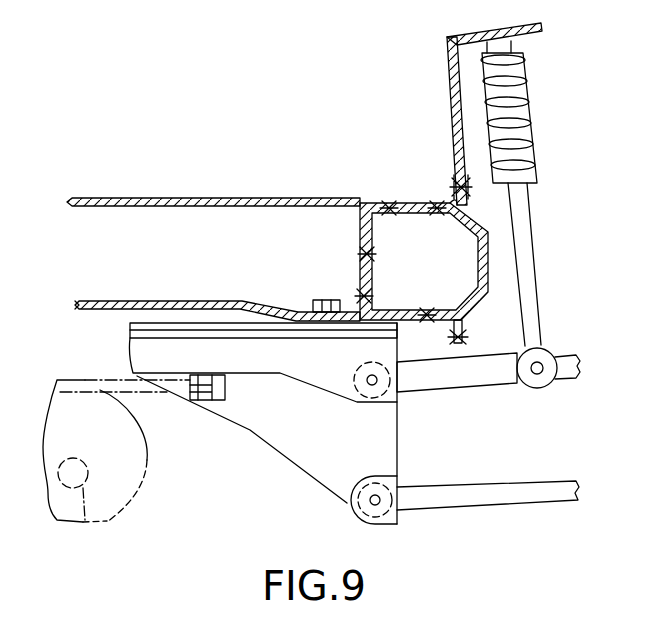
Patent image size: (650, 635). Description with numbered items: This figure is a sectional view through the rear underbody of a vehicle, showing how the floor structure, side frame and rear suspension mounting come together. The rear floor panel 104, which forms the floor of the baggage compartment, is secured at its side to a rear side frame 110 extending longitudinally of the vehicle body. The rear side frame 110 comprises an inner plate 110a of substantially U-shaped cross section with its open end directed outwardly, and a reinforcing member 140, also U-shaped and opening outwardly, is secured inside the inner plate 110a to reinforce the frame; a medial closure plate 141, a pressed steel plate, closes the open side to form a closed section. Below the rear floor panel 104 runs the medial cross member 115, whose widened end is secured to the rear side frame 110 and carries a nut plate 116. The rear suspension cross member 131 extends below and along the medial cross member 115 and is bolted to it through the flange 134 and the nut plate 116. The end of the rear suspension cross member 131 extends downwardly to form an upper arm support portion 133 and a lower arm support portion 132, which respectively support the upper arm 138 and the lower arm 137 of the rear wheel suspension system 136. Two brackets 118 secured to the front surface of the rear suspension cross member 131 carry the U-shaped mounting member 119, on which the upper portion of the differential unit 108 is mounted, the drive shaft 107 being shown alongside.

The rear floor panel 104 is at (131, 198).
The drive shaft 107 is at (85, 520).
The differential unit 108 is at (133, 503).
The rear side frame 110 is at (422, 202).
The inner plate 110a is at (360, 237).
The medial cross member 115 is at (114, 311).
The nut plate 116 is at (308, 313).
The bracket 118 is at (226, 390).
The mounting member 119 is at (140, 393).
The rear suspension cross member 131 is at (208, 410).
The lower arm support portion 132 is at (347, 502).
The upper arm support portion 133 is at (372, 402).
The flange 134 is at (332, 338).
The rear wheel suspension system 136 is at (560, 175).
The lower arm 137 is at (503, 503).
The upper arm 138 is at (500, 387).
The reinforcing member 140 is at (372, 275).
The medial closure plate 141 is at (477, 305).